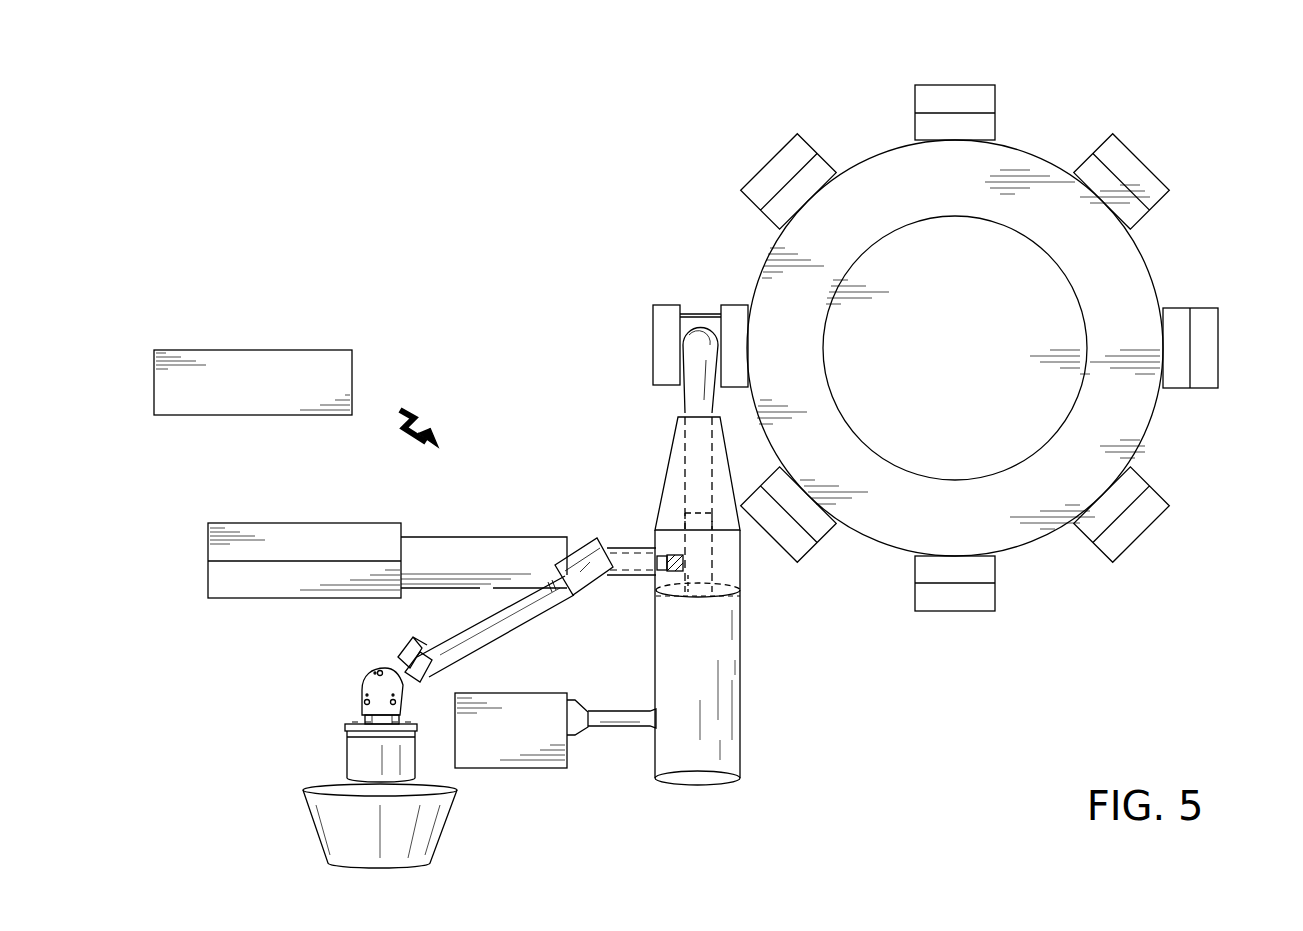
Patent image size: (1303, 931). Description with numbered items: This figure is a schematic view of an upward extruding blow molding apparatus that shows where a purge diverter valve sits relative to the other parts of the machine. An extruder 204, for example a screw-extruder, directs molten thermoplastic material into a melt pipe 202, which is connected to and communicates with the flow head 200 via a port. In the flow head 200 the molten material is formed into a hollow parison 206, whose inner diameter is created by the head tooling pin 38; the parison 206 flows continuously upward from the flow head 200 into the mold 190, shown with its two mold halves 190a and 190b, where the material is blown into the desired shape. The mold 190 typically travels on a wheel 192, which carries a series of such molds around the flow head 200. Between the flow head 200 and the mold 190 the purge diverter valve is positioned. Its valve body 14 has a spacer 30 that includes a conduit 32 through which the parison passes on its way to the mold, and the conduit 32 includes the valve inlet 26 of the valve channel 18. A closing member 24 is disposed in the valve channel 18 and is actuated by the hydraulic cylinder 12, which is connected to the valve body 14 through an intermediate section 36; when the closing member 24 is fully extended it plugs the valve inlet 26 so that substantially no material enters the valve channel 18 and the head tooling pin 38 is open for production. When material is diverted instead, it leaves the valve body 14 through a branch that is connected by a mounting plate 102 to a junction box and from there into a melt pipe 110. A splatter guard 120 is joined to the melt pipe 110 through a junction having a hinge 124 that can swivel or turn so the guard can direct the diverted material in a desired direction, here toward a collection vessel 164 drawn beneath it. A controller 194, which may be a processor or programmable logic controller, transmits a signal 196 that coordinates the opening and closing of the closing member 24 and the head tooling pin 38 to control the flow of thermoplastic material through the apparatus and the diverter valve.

The hydraulic cylinder 12 is at (272, 537).
The valve body 14 is at (622, 548).
The valve channel 18 is at (630, 572).
The closing member 24 is at (672, 575).
The valve inlet 26 is at (692, 575).
The spacer 30 is at (732, 572).
The conduit 32 is at (703, 577).
The intermediate section 36 is at (463, 548).
The head tooling pin 38 is at (688, 515).
The mounting plate 102 is at (597, 542).
The melt pipe 110 is at (438, 647).
The splatter guard 120 is at (358, 755).
The hinge 124 is at (375, 690).
The collection vessel 164 is at (337, 827).
The mold 190 is at (775, 168).
The mold half 190a is at (663, 330).
The mold half 190b is at (737, 318).
The wheel 192 is at (1112, 292).
The controller 194 is at (238, 360).
The signal 196 is at (418, 415).
The flow head 200 is at (712, 738).
The melt pipe 202 is at (622, 722).
The extruder 204 is at (505, 755).
The parison 206 is at (698, 347).